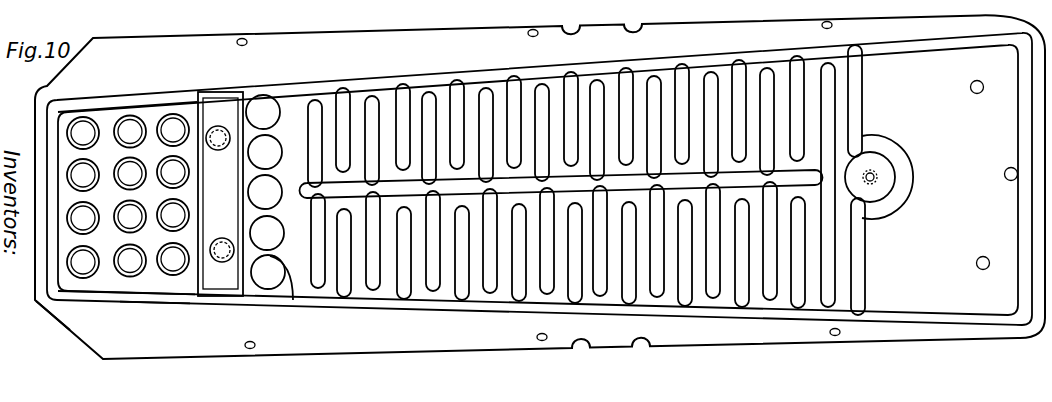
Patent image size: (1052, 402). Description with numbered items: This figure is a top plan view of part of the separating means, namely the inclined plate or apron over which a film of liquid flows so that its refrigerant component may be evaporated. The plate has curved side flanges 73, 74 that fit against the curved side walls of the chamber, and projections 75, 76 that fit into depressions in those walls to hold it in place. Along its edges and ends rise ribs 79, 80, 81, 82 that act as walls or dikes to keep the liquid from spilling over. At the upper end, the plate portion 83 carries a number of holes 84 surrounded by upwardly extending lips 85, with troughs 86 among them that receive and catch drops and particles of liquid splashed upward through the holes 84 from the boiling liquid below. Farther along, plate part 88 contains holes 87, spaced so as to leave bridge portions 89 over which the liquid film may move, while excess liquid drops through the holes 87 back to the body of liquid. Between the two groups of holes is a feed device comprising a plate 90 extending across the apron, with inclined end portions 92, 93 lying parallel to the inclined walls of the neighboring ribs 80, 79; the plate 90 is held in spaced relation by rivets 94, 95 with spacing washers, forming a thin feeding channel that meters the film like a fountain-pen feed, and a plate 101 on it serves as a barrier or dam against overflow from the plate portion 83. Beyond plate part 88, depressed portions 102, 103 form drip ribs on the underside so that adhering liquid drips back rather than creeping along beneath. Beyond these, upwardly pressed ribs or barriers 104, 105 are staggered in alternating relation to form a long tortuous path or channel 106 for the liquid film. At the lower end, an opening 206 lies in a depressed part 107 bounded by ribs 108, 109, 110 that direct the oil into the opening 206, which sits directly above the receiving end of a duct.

The curved side flange 73 is at (291, 38).
The curved side flange 74 is at (55, 307).
The projection 75 is at (248, 342).
The projection 76 is at (246, 46).
The upwardly extending rib 79 is at (145, 98).
The upwardly extending rib 80 is at (154, 302).
The upwardly extending rib 81 is at (47, 140).
The upwardly extending rib 82 is at (1018, 212).
The plate portion 83 is at (110, 290).
The holes 84 is at (128, 223).
The upwardly extending lips 85 is at (130, 116).
The troughs 86 is at (158, 116).
The holes 87 is at (270, 277).
The plate part 88 is at (293, 250).
The bridge portions 89 is at (293, 300).
The plate 90 is at (242, 158).
The inclined end portion 92 is at (224, 262).
The inclined end portion 93 is at (206, 116).
The rivet 94 is at (222, 245).
The rivet 95 is at (219, 140).
The plate 101 is at (199, 183).
The depressed portion 102 is at (318, 278).
The depressed portion 103 is at (313, 100).
The upwardly pressed ribs 104 is at (456, 88).
The upwardly pressed ribs 105 is at (490, 105).
The tortuous path or channel 106 is at (446, 140).
The depressed part 107 is at (893, 177).
The barrier or rib 108 is at (860, 94).
The barrier or rib 109 is at (860, 248).
The barrier or rib 110 is at (908, 190).
The opening 206 is at (873, 175).